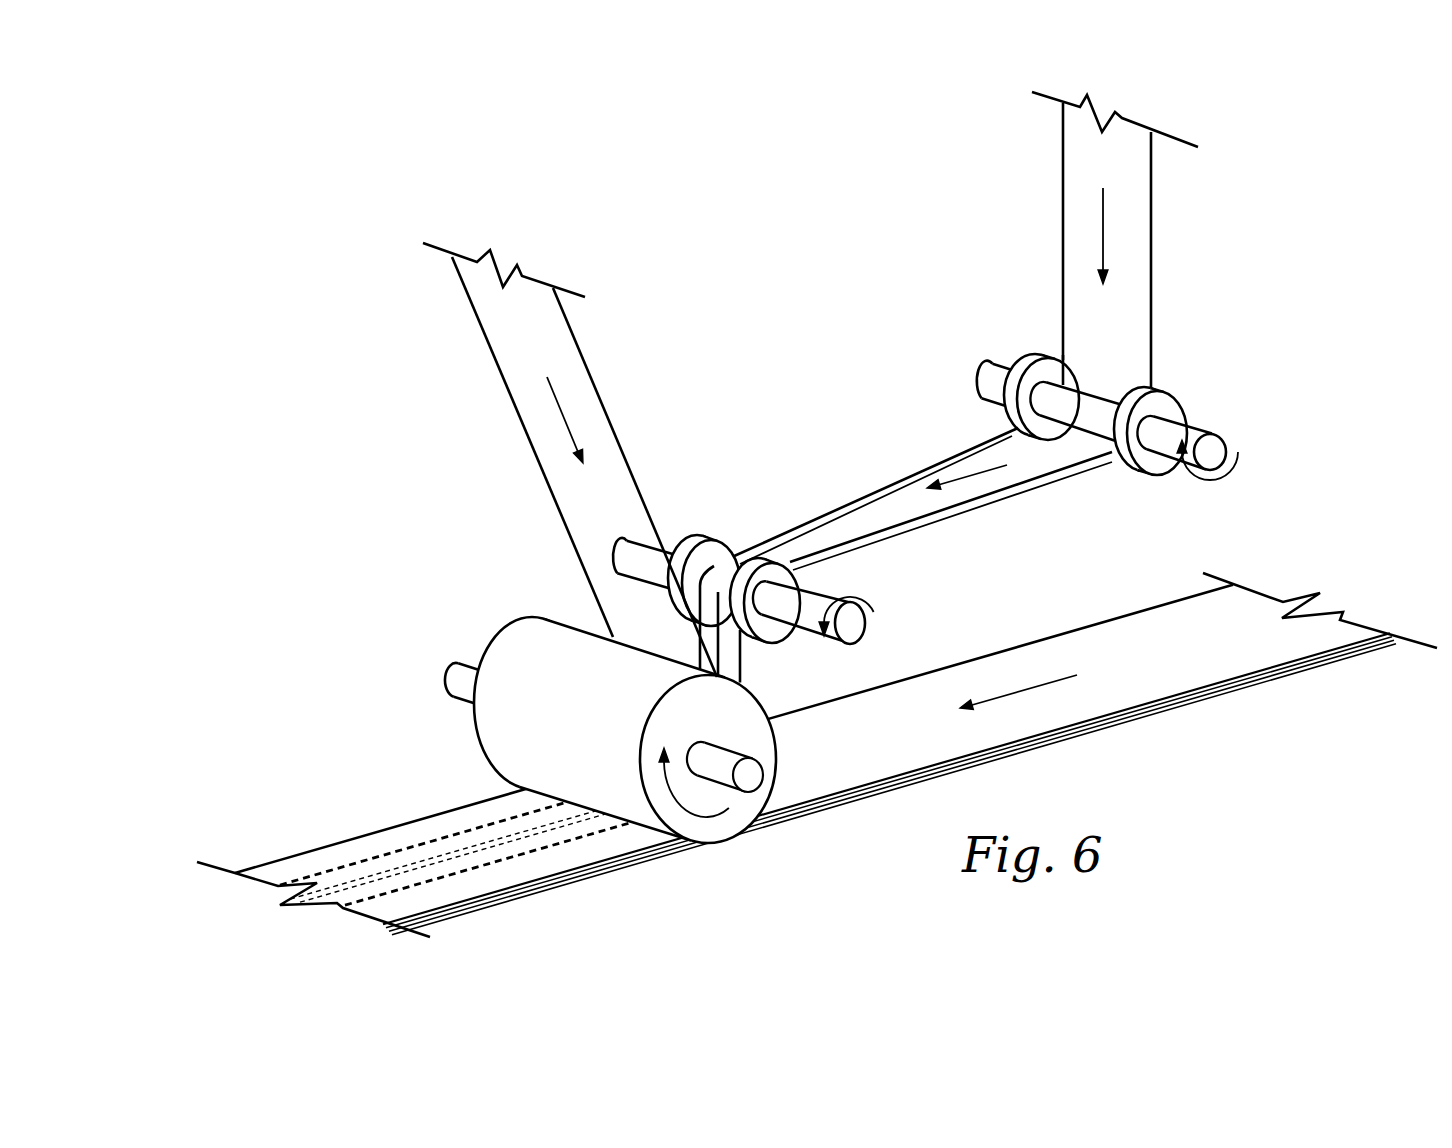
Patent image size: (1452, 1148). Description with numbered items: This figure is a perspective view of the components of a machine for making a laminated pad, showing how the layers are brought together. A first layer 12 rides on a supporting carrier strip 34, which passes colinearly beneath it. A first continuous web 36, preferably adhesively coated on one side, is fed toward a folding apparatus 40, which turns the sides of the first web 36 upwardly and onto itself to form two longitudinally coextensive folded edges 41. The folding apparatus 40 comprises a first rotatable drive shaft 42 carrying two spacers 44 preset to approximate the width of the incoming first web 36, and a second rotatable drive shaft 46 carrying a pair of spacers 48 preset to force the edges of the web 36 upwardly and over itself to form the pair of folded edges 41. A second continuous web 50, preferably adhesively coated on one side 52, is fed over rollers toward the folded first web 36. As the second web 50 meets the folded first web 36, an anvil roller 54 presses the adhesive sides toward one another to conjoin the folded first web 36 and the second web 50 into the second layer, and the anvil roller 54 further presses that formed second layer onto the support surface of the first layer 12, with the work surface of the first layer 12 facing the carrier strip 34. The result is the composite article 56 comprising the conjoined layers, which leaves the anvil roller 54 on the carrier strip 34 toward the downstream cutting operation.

The first layer 12 is at (1083, 650).
The supporting carrier strip 34 is at (1225, 690).
The first continuous web 36 is at (1135, 285).
The folding apparatus 40 is at (867, 492).
The folded edges 41 is at (860, 537).
The first rotatable drive shaft 42 is at (1103, 405).
The spacers 44 is at (1035, 358).
The second rotatable drive shaft 46 is at (807, 627).
The spacers 48 is at (695, 543).
The second continuous web 50 is at (540, 330).
The adhesively coated side 52 is at (612, 392).
The anvil roller 54 is at (517, 648).
The composite article 56 is at (350, 838).